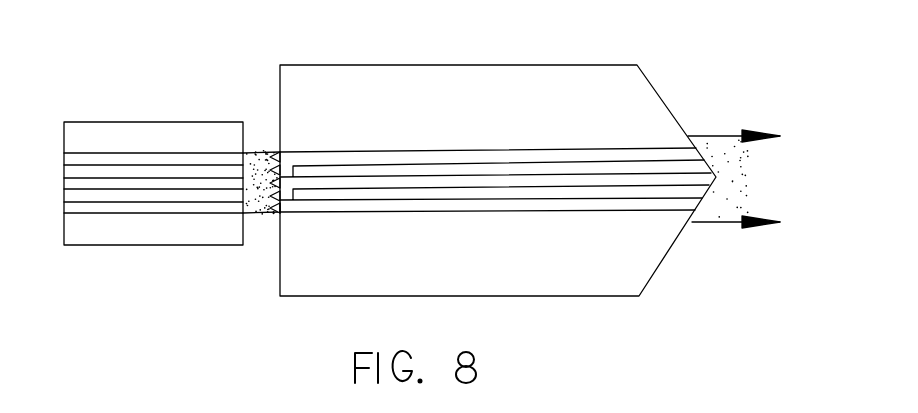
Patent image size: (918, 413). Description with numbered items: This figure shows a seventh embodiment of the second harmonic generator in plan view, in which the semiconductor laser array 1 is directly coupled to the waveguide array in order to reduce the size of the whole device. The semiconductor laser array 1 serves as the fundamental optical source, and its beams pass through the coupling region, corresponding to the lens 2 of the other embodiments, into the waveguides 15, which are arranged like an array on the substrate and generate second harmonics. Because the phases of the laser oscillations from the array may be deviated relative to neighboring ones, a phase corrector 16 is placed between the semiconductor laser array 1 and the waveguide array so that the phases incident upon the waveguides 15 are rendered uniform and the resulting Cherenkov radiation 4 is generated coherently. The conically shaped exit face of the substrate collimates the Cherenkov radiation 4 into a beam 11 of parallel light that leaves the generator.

The semiconductor laser array 1 is at (154, 247).
The lens 2 is at (273, 150).
The Cherenkov radiation 4 is at (417, 65).
The waveguides 15 is at (507, 173).
The phase corrector 16 is at (284, 211).
The beam 11 is at (715, 211).